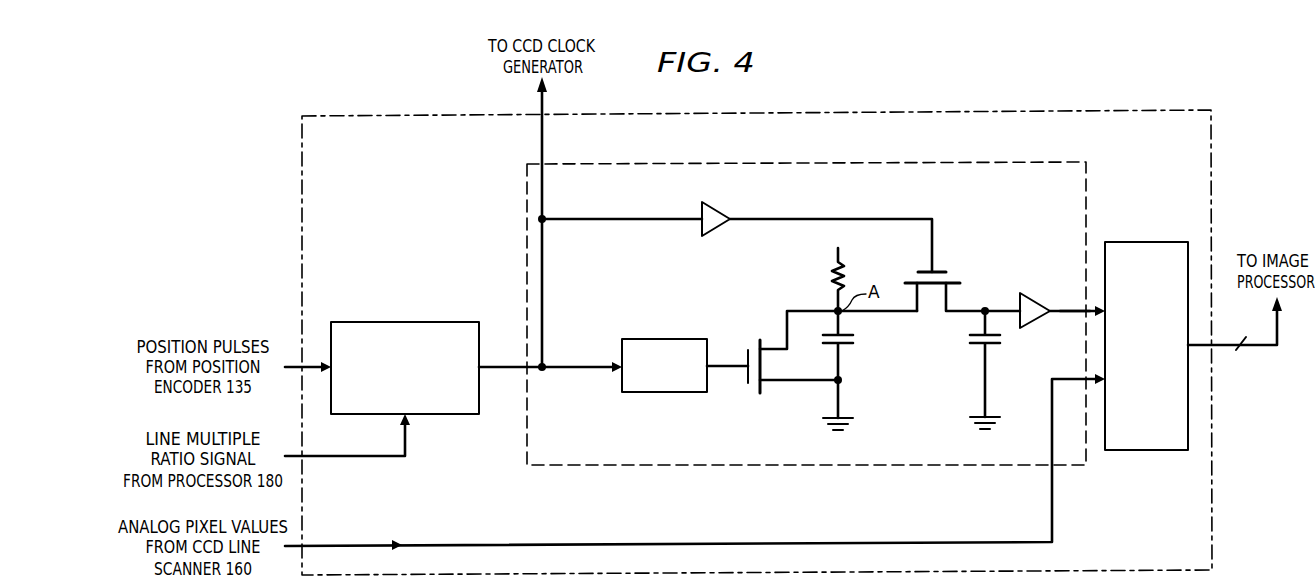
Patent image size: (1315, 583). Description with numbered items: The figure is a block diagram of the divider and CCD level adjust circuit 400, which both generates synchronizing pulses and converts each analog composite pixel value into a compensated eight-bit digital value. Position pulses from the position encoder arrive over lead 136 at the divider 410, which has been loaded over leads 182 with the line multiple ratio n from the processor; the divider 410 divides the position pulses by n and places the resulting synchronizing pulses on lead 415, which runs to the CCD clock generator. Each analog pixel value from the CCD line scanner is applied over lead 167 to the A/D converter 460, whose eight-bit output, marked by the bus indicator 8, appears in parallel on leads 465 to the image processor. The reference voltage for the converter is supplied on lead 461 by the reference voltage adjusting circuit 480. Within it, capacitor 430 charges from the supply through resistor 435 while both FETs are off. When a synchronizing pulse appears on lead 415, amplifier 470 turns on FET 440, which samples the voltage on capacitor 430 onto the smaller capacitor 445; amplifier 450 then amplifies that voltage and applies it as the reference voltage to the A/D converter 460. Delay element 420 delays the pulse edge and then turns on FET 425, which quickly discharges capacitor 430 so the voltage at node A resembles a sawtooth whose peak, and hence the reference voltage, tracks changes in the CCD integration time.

The divider and CCD level adjust circuit 400 is at (1130, 110).
The divider 410 is at (421, 322).
The lead 415 is at (540, 106).
The delay element 420 is at (667, 339).
The field effect transistor 425 is at (756, 379).
The capacitor 430 is at (855, 338).
The resistor 435 is at (834, 282).
The field effect transistor 440 is at (944, 272).
The capacitor 445 is at (968, 338).
The amplifier 450 is at (1034, 297).
The A/D converter 460 is at (1160, 242).
The lead 461 is at (1073, 313).
The leads 465 is at (1257, 348).
The amplifier 470 is at (715, 205).
The reference voltage adjusting circuit 480 is at (979, 163).
The lead 136 is at (295, 367).
The leads 182 is at (342, 456).
The lead 167 is at (340, 546).
The 8-bit output bus 8 is at (1235, 336).